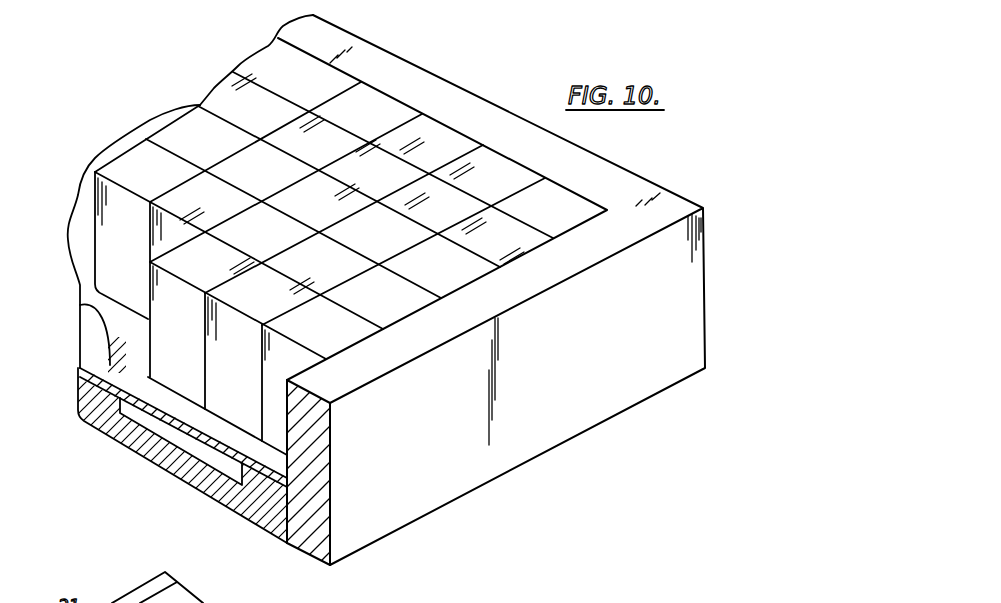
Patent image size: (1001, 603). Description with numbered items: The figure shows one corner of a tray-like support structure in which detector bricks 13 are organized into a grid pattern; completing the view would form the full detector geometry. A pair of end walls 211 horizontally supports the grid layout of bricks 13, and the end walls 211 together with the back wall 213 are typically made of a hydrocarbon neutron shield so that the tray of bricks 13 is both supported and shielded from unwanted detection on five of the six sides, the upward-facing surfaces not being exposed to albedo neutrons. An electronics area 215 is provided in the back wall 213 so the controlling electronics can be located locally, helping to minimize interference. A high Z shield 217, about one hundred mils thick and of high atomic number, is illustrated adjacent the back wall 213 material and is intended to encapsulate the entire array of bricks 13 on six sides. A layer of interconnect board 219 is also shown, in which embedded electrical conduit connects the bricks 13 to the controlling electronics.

The bricks 13 is at (177, 135).
The end walls 211 is at (664, 200).
The back wall 213 is at (260, 513).
The electronics area 215 is at (185, 443).
The high Z shield 217 is at (80, 344).
The interconnect board 219 is at (133, 381).